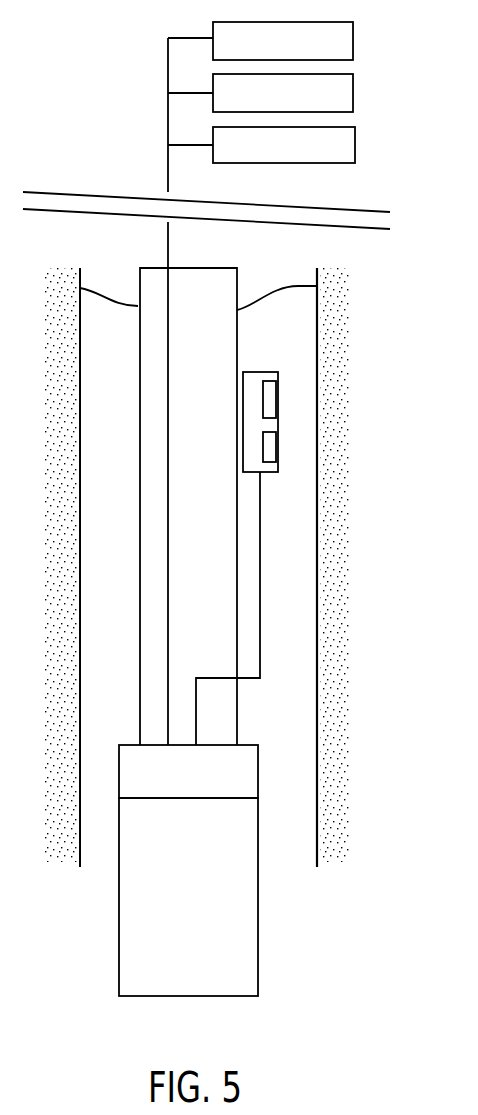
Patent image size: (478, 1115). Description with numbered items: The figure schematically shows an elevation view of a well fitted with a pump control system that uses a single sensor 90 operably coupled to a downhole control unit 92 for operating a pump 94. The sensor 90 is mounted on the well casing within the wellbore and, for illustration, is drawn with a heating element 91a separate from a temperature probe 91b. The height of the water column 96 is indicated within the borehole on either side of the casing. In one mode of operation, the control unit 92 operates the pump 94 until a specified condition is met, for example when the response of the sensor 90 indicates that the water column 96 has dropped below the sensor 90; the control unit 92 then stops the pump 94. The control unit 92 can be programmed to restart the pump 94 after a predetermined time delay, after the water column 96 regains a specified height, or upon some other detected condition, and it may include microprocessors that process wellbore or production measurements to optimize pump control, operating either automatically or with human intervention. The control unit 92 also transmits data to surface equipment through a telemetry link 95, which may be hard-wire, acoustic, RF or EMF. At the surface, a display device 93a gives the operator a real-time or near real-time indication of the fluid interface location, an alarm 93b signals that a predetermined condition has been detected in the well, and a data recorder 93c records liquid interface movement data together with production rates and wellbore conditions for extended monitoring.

The telemetry link 95 is at (167, 91).
The display device 93a is at (353, 35).
The alarm 93b is at (353, 90).
The data recorder 93c is at (355, 140).
The water column 96 is at (285, 288).
The single sensor 90 is at (303, 556).
The heating element 91a is at (273, 407).
The temperature probe 91b is at (273, 449).
The control unit 92 is at (258, 774).
The pump 94 is at (204, 918).